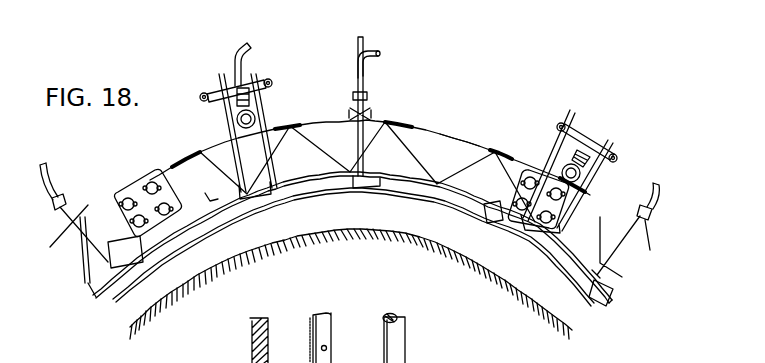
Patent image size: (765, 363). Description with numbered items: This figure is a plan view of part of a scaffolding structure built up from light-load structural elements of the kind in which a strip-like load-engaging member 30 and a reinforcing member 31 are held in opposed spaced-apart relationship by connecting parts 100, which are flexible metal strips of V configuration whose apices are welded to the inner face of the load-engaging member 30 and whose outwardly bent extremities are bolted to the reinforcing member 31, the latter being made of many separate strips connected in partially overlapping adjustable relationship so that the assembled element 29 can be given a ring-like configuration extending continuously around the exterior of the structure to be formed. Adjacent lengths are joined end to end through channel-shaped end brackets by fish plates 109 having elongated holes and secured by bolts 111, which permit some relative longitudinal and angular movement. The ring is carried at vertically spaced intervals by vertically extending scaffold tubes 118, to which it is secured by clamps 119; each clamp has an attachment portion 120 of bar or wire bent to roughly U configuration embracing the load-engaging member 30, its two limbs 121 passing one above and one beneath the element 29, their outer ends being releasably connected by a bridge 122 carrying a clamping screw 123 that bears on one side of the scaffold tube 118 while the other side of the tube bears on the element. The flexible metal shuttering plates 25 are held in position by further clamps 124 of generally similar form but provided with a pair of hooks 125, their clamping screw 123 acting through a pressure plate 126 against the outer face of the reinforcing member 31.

The shuttering plates 25 is at (318, 190).
The element 29 is at (212, 201).
The load-engaging member 30 is at (430, 185).
The reinforcing member 31 is at (463, 137).
The connecting parts 100 is at (367, 172).
The fish plates 109 is at (142, 197).
The bolts 111 is at (519, 208).
The scaffold tubes 118 is at (250, 103).
The clamps 119 is at (270, 82).
The attachment portion 120 is at (240, 134).
The limbs 121 is at (225, 86).
The bridge 122 is at (215, 92).
The clamping screw 123 is at (250, 50).
The further clamps 124 is at (366, 92).
The hooks 125 is at (97, 240).
The pressure plate 126 is at (368, 112).